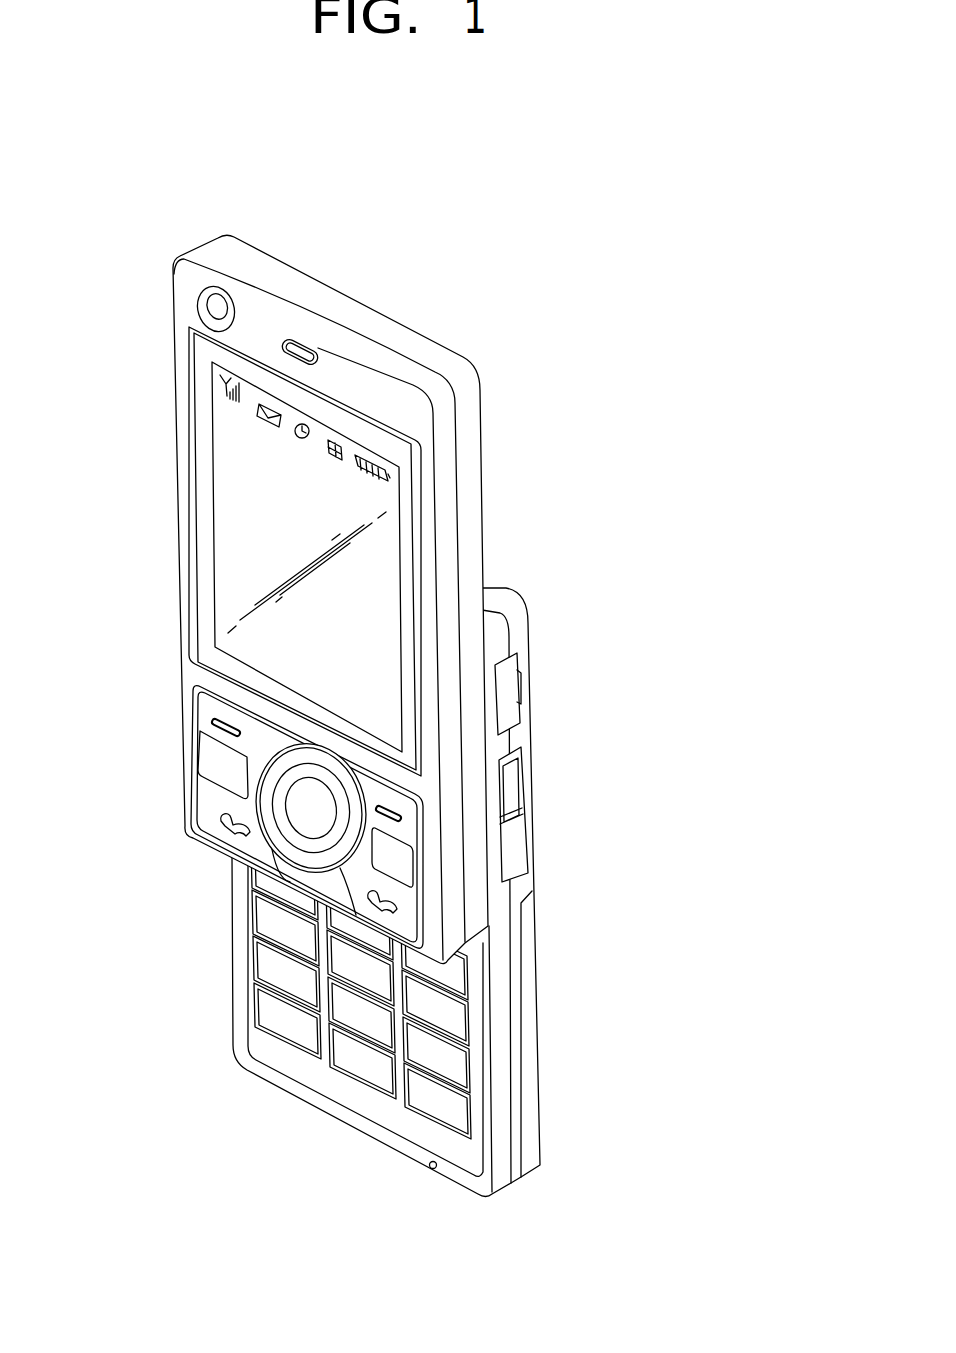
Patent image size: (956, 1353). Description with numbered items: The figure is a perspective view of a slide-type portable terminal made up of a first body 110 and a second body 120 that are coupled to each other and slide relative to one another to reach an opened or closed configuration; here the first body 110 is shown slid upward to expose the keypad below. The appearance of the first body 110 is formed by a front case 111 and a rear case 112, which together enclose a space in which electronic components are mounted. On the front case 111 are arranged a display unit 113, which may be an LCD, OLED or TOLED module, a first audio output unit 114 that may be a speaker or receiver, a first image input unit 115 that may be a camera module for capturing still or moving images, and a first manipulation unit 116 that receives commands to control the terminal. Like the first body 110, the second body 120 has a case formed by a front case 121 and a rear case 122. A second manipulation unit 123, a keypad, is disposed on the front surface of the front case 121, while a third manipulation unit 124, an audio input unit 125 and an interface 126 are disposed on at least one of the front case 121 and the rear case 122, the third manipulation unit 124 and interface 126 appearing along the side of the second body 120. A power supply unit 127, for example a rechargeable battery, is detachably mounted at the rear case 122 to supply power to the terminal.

The first body 110 is at (126, 399).
The front case 111 is at (448, 483).
The rear case 112 is at (470, 440).
The display unit 113 is at (228, 498).
The first audio output unit 114 is at (300, 343).
The first image input unit 115 is at (222, 308).
The first manipulation unit 116 is at (213, 757).
The second body 120 is at (213, 936).
The front case 121 is at (492, 626).
The rear case 122 is at (521, 650).
The second manipulation unit 123 is at (264, 998).
The third manipulation unit 124 is at (517, 843).
The audio input unit 125 is at (433, 1170).
The interface 126 is at (510, 688).
The power supply unit 127 is at (527, 1007).